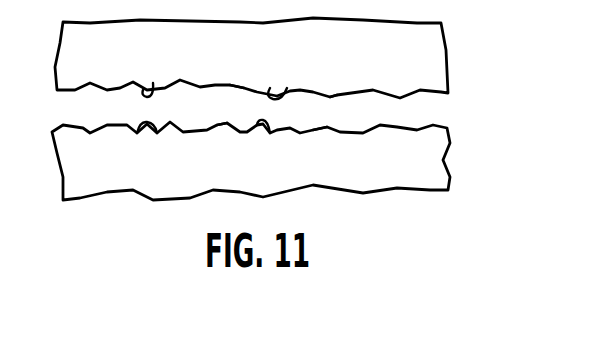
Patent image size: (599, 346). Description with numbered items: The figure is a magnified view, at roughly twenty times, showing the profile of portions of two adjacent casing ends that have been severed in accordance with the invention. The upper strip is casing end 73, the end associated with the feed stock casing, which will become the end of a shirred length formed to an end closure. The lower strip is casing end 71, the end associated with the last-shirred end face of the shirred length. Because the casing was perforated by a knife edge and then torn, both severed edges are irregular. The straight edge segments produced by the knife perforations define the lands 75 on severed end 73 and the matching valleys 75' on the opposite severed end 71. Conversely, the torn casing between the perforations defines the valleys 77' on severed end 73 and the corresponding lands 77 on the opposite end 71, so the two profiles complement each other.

The casing end 71 is at (427, 165).
The casing end 73 is at (428, 60).
The lands 75 is at (213, 69).
The lands 77 is at (293, 68).
The valleys 75' is at (199, 149).
The valleys 77' is at (283, 150).